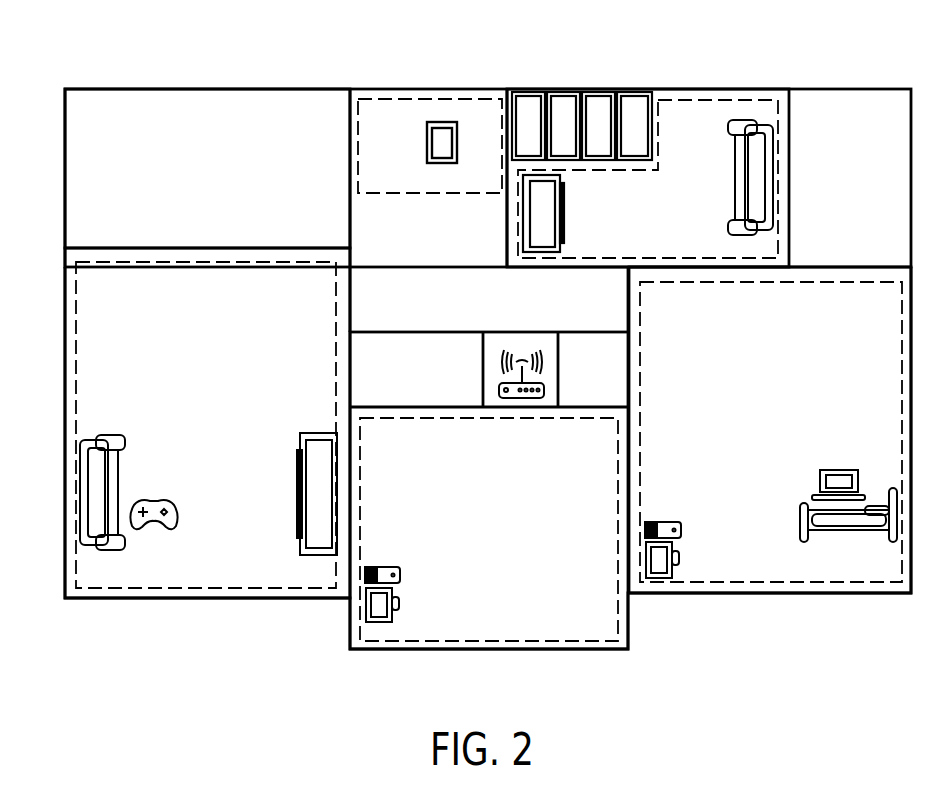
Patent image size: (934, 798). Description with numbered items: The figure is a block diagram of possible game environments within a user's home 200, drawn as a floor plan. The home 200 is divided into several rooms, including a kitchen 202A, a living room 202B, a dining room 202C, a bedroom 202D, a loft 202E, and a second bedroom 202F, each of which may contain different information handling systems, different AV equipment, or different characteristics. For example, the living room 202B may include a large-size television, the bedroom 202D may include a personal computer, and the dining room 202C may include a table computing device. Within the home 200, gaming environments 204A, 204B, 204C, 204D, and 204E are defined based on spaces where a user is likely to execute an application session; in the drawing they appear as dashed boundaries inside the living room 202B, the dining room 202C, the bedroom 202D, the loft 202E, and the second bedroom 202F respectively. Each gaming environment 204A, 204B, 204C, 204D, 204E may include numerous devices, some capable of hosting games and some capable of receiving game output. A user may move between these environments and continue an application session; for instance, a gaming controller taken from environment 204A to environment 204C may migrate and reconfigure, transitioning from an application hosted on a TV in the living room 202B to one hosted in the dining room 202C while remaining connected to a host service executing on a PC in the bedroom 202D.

The user's home 200 is at (88, 75).
The room 202A is at (93, 182).
The living room 202B is at (118, 355).
The dining room 202C is at (362, 215).
The bedroom 202D is at (502, 610).
The room 202E is at (683, 132).
The room 202F is at (758, 560).
The gaming environment 204A is at (235, 590).
The gaming environment 204B is at (433, 97).
The gaming environment 204C is at (401, 643).
The gaming environment 204D is at (720, 253).
The gaming environment 204E is at (731, 281).